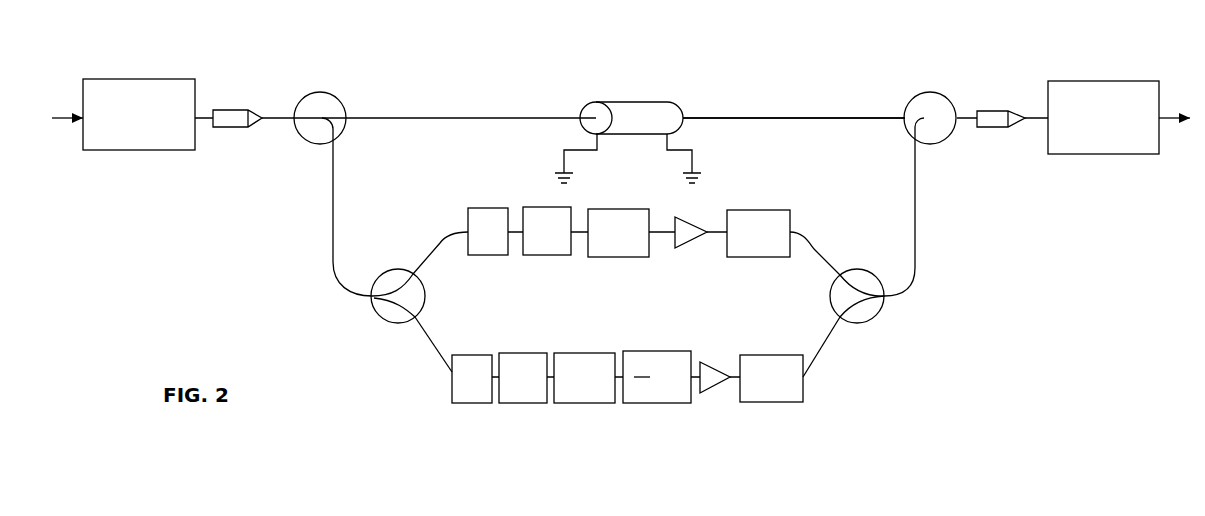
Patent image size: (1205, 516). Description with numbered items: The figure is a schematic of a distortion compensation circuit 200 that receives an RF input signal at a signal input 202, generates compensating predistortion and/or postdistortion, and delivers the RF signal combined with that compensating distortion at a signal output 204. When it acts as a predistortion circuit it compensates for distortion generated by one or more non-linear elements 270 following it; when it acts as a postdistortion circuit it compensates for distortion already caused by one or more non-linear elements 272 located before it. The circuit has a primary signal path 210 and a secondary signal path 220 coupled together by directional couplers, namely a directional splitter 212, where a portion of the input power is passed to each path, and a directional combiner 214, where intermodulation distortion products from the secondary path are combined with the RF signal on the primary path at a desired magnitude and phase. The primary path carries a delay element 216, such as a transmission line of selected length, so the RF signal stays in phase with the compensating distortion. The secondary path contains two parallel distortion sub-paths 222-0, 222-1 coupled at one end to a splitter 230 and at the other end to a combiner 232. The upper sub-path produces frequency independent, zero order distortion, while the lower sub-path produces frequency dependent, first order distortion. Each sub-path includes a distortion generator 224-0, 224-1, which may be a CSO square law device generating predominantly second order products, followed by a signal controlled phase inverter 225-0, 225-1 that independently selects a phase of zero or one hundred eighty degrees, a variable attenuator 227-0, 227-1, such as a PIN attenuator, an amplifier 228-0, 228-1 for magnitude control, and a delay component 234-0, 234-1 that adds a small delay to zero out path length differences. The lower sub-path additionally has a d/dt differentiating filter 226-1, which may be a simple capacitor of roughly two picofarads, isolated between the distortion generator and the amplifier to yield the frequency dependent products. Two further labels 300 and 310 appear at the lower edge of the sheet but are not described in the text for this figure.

The distortion compensation circuit 200 is at (444, 80).
The signal input 202 is at (220, 110).
The signal output 204 is at (993, 110).
The primary signal path 210 is at (732, 106).
The directional splitter 212 is at (303, 97).
The directional combiner 214 is at (910, 100).
The delay element 216 is at (597, 102).
The secondary signal path 220 is at (250, 246).
The distortion sub-path 222-0 is at (402, 236).
The distortion sub-path 222-1 is at (402, 351).
The distortion generator 224-0 is at (490, 255).
The distortion generator 224-1 is at (472, 403).
The signal controlled phase inverter 225-0 is at (540, 255).
The signal controlled phase inverter 225-1 is at (525, 403).
The d/dt differentiating filter 226-1 is at (640, 403).
The variable attenuator 227-0 is at (602, 257).
The variable attenuator 227-1 is at (580, 403).
The amplifier 228-0 is at (690, 243).
The amplifier 228-1 is at (717, 387).
The splitter 230 is at (380, 320).
The combiner 232 is at (870, 317).
The delay component 234-0 is at (777, 257).
The delay component 234-1 is at (787, 402).
The non-linear element 270 is at (1127, 154).
The non-linear element 272 is at (117, 150).
The reference numeral (adjacent figure) 300 is at (364, 507).
The reference numeral (adjacent figure) 310 is at (697, 503).